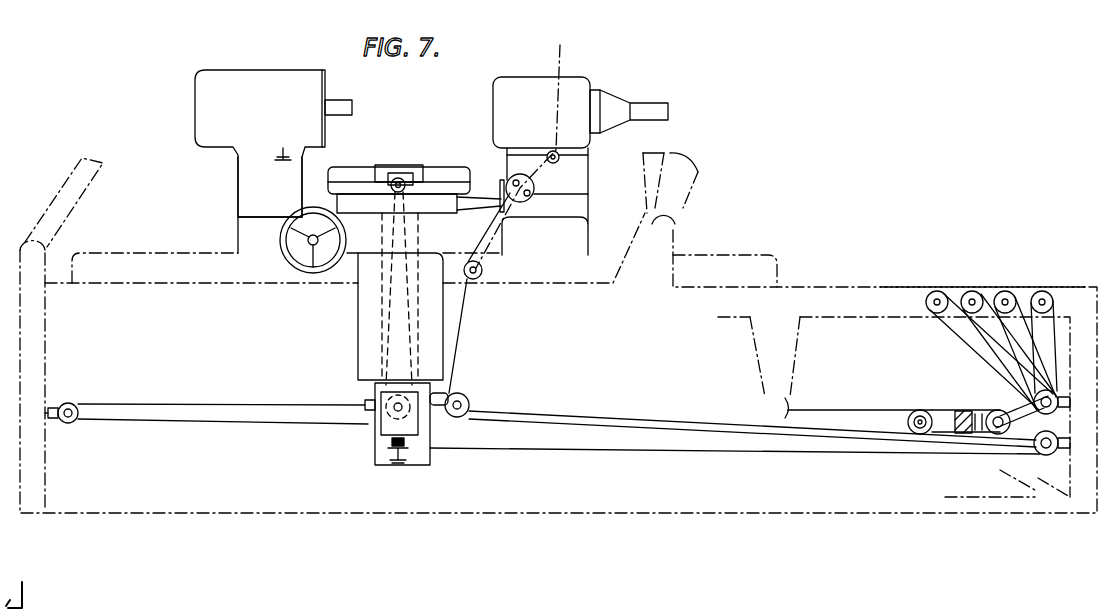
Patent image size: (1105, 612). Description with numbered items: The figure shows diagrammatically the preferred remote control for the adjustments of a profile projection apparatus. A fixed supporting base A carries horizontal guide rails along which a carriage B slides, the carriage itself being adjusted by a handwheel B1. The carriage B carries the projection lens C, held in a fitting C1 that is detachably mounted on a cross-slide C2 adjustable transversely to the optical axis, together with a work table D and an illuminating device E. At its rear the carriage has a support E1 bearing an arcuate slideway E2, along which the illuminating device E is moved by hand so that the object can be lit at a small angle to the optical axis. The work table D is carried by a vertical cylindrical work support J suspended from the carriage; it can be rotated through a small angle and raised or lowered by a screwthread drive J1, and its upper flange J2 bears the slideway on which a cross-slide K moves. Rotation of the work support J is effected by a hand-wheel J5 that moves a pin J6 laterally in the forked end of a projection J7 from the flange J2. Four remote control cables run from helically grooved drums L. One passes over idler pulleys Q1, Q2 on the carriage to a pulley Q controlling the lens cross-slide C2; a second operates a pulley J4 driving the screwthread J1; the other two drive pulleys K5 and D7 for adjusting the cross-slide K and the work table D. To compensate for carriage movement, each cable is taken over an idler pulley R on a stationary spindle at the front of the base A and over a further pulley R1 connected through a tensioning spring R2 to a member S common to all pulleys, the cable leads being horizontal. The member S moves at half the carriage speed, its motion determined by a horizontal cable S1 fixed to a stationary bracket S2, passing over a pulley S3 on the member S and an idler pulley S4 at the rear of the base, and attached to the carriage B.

The fixed supporting base A is at (45, 345).
The carriage B is at (250, 233).
The handwheel B1 is at (300, 273).
The projection lens C is at (643, 112).
The fitting C1 is at (525, 110).
The cross-slide C2 is at (588, 155).
The work table D is at (338, 173).
The pulley D7 is at (408, 129).
The illuminating device E is at (236, 112).
The support E1 is at (263, 193).
The arcuate slideway E2 is at (284, 148).
The work support J is at (382, 322).
The screwthread drive J1 is at (398, 441).
The flange J2 is at (357, 203).
The pulley J4 is at (392, 458).
The hand-wheel J5 is at (588, 195).
The pin J6 is at (502, 175).
The projection J7 is at (471, 200).
The cross-slide K is at (435, 177).
The pulley K5 is at (398, 180).
The helically grooved drum L is at (1042, 292).
The pulley Q is at (522, 144).
The idler pulley Q1 is at (466, 401).
The idler pulley Q2 is at (479, 271).
The idler pulley R is at (1052, 412).
The pulley R1 is at (995, 437).
The tensioning spring R2 is at (960, 434).
The member S is at (943, 412).
The cable S1 is at (813, 410).
The stationary bracket S2 is at (753, 343).
The pulley S3 is at (917, 414).
The idler pulley S4 is at (72, 420).